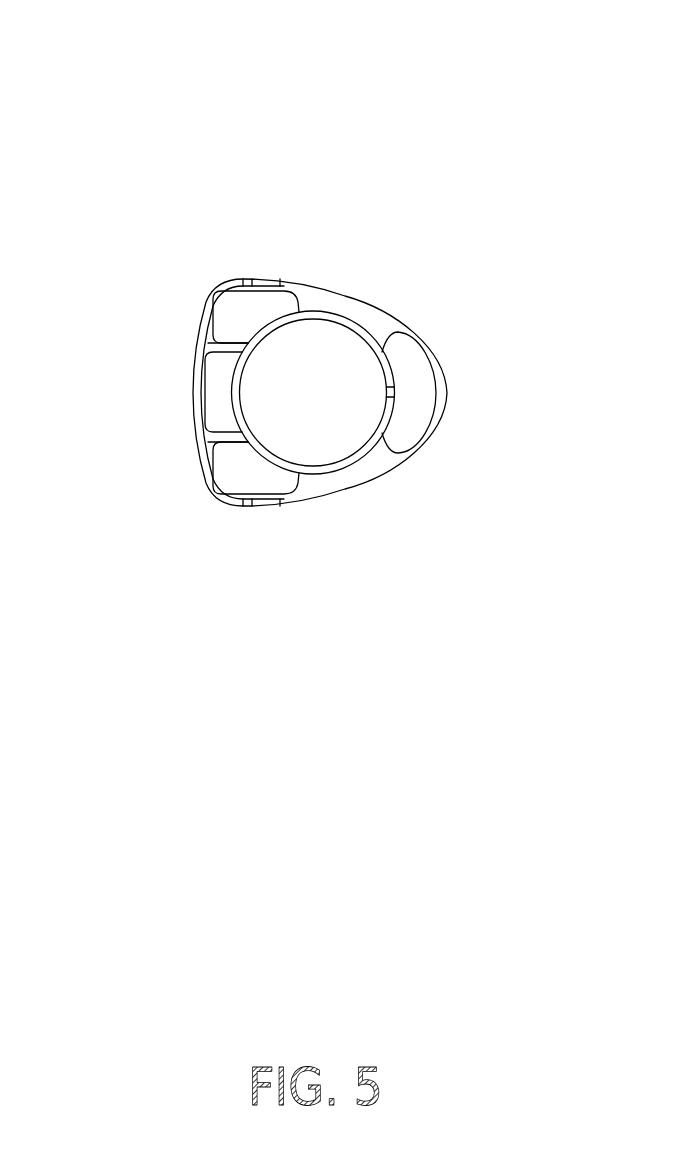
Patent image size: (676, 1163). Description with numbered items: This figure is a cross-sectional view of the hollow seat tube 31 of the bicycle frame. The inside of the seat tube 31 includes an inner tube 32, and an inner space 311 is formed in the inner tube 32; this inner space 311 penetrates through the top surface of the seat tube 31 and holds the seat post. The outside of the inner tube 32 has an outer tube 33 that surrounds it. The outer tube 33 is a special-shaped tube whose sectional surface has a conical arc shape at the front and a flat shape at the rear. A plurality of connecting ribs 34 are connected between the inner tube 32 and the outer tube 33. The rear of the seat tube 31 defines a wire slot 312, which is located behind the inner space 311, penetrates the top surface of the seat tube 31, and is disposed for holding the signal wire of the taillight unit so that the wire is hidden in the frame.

The seat tube 31 is at (88, 47).
The inner space 311 is at (350, 374).
The wire slot 312 is at (213, 403).
The inner tube 32 is at (262, 453).
The outer tube 33 is at (428, 435).
The connecting ribs 34 is at (310, 480).